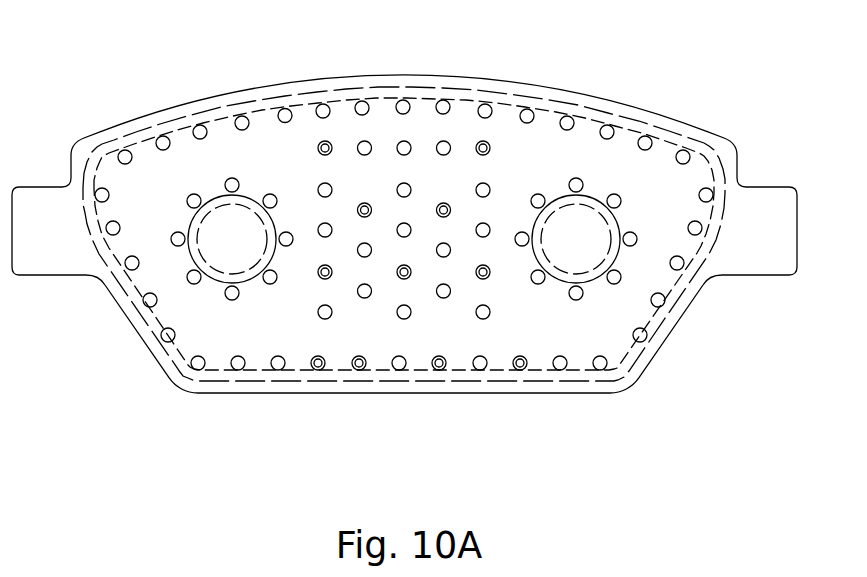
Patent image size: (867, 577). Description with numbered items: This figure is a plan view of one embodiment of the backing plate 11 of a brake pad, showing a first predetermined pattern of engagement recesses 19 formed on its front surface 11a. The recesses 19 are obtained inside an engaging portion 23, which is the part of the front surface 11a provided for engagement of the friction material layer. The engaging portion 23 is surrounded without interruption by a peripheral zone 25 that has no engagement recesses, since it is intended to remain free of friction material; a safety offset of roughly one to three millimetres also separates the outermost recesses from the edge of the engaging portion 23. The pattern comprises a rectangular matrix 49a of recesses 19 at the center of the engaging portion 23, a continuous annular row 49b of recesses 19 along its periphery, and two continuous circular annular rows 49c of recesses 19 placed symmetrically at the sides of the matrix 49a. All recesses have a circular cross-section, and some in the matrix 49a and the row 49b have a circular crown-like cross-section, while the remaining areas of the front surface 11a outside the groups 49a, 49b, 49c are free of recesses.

The backing plate 11 is at (81, 338).
The front surface 11a is at (513, 310).
The engagement recesses 19 is at (198, 193).
The engaging portion 23 is at (270, 97).
The peripheral zone 25 is at (400, 383).
The rectangular matrix 49a is at (525, 170).
The continuous annular row 49b is at (297, 139).
The circular annular rows 49c is at (639, 262).